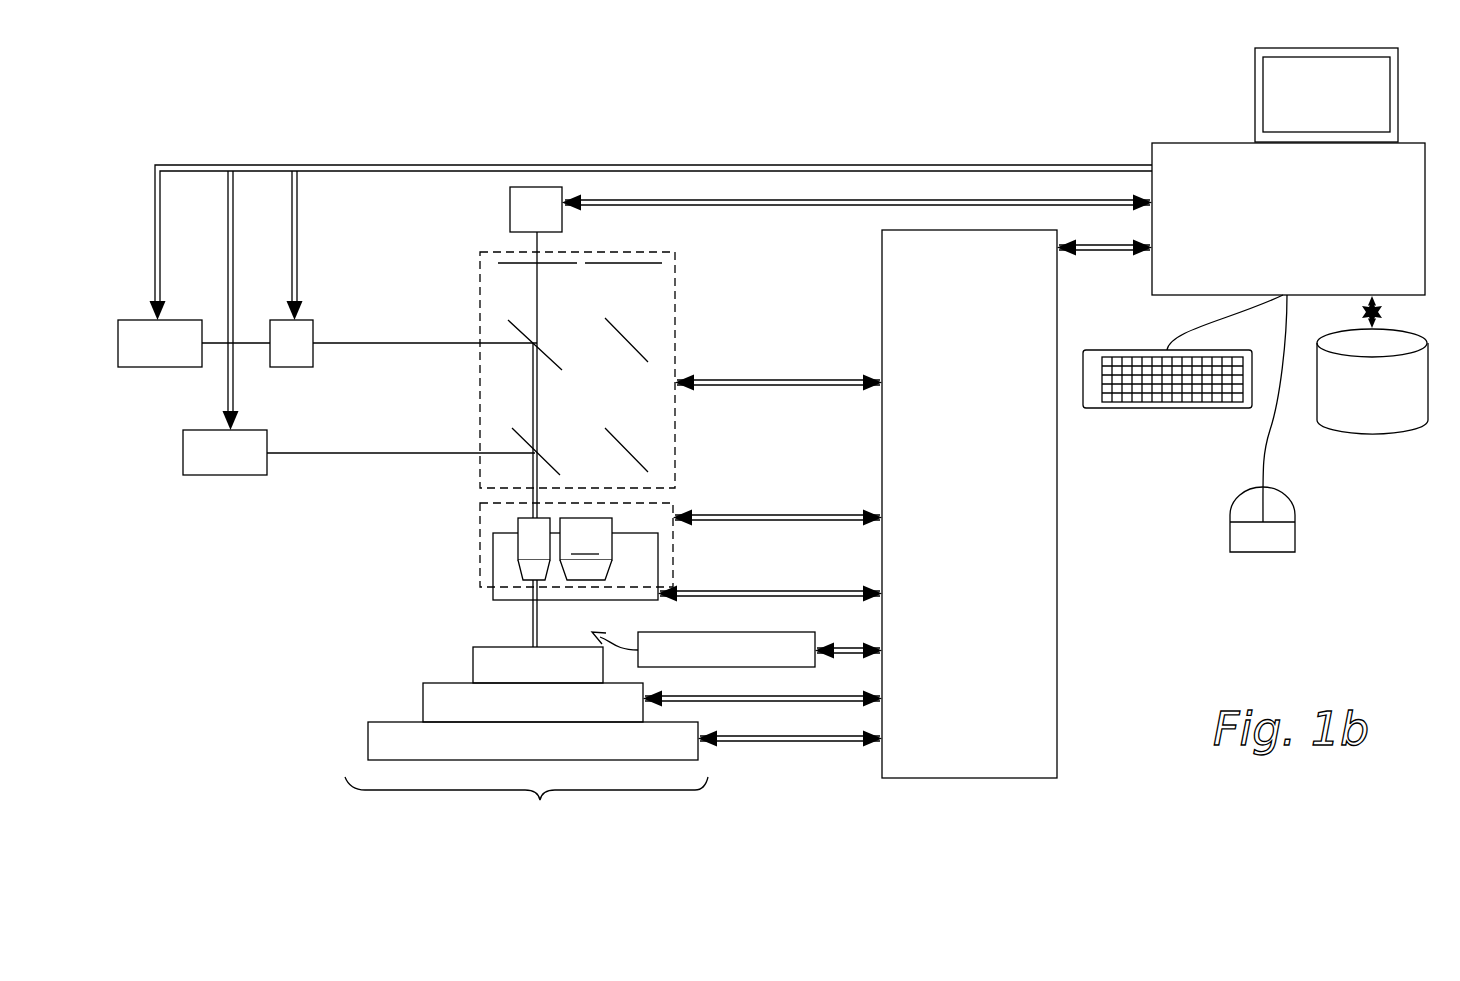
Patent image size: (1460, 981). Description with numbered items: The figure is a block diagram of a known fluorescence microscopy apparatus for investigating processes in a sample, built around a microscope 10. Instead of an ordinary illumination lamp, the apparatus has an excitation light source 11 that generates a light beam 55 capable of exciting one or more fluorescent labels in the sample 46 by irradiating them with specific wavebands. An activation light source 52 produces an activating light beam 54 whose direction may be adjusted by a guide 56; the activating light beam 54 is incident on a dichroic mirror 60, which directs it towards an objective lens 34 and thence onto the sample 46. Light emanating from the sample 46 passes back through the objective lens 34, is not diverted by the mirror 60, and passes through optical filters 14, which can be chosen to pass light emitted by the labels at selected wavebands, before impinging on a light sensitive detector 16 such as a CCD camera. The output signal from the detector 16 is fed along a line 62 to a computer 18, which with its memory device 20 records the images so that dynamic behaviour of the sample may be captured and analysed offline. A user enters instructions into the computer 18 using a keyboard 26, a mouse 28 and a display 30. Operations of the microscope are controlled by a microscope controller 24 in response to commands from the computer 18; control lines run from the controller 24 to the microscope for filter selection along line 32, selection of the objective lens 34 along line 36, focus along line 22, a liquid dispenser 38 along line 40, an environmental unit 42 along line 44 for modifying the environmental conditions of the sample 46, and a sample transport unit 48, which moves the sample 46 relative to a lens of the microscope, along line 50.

The microscope 10 is at (526, 806).
The excitation light source 11 is at (212, 466).
The optical filters 14 is at (570, 274).
The light sensitive detector 16 is at (523, 223).
The computer 18 is at (1277, 231).
The memory device 20 is at (1359, 402).
The focus control line 22 is at (778, 590).
The microscope controller 24 is at (956, 476).
The keyboard 26 is at (1210, 408).
The mouse 28 is at (1290, 540).
The display 30 is at (1310, 111).
The filter selection control line 32 is at (800, 388).
The objective lens 34 is at (527, 540).
The objective lens selection control line 36 is at (778, 500).
The liquid dispenser 38 is at (712, 664).
The liquid dispenser control line 40 is at (846, 645).
The environmental unit 42 is at (525, 717).
The environmental unit control line 44 is at (742, 702).
The sample 46 is at (525, 679).
The sample transport unit 48 is at (525, 755).
The sample transport control line 50 is at (783, 745).
The activation light source 52 is at (147, 366).
The activating light beam 54 is at (460, 345).
The light beam 55 is at (435, 455).
The guide 56 is at (278, 366).
The dichroic mirror 60 is at (540, 347).
The detector output line 62 is at (828, 200).